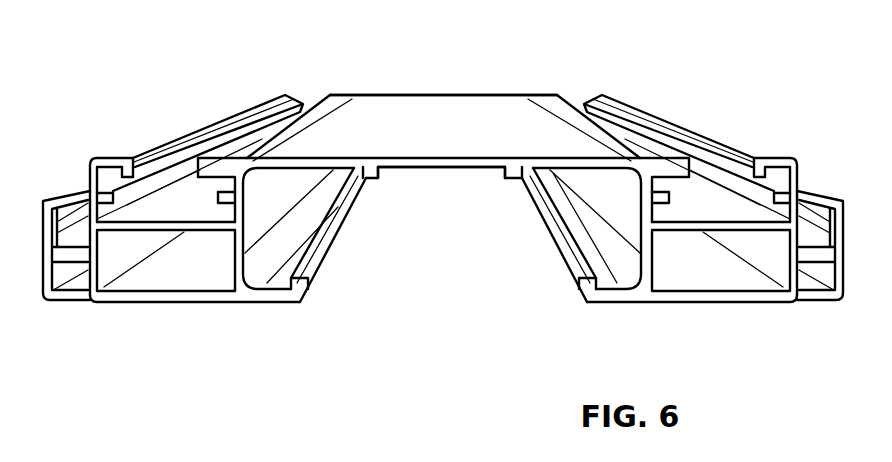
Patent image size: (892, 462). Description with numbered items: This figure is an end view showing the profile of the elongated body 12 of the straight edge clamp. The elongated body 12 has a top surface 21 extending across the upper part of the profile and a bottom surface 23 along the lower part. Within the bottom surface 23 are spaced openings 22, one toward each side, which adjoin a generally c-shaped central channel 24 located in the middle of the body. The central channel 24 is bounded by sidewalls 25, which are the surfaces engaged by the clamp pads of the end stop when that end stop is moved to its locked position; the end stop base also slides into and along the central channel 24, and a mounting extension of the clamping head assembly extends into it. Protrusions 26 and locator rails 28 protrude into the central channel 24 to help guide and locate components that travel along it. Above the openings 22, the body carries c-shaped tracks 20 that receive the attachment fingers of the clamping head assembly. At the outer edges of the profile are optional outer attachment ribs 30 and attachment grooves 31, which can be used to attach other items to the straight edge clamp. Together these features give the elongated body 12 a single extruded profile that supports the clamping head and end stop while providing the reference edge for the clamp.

The elongated body 12 is at (380, 121).
The c-shaped tracks 20 is at (163, 166).
The top surface 21 is at (446, 110).
The spaced openings 22 is at (192, 281).
The bottom surface 23 is at (118, 303).
The central channel 24 is at (410, 265).
The sidewalls 25 is at (301, 231).
The protrusions 26 is at (372, 181).
The locator rails 28 is at (298, 289).
The outer attachment ribs 30 is at (48, 222).
The attachment grooves 31 is at (72, 212).